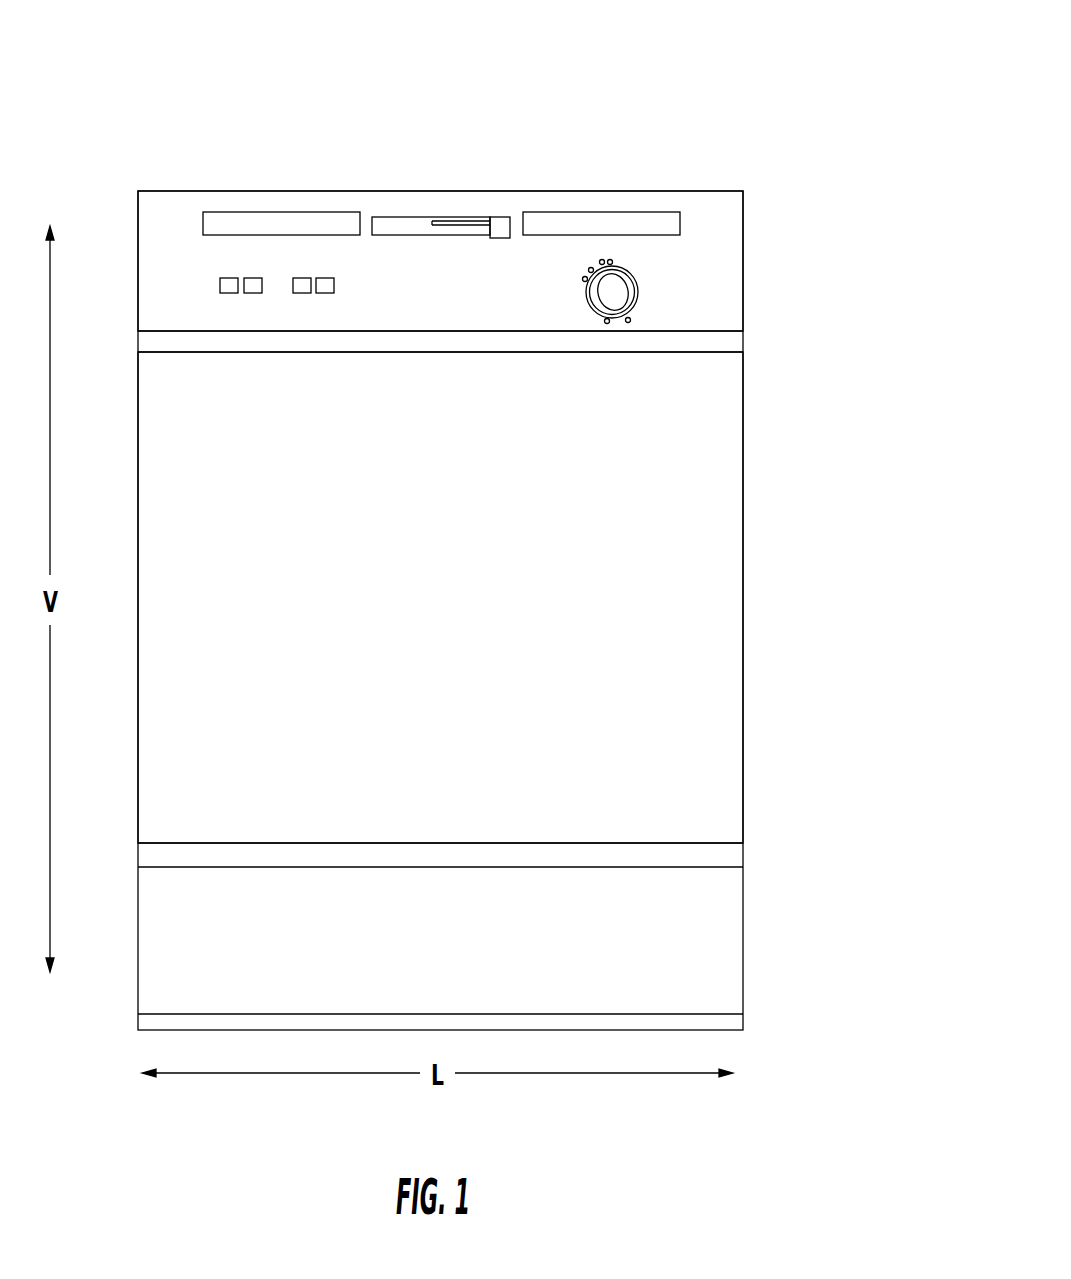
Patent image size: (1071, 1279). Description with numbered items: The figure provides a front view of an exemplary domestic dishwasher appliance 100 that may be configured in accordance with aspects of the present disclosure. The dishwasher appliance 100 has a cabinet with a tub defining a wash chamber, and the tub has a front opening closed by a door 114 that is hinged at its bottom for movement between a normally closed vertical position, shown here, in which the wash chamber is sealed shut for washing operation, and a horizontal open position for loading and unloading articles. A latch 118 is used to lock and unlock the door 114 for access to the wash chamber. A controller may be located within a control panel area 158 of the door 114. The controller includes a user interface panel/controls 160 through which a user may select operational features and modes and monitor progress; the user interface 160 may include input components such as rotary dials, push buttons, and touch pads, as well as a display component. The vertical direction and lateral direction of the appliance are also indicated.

The dishwasher appliance 100 is at (650, 100).
The door 114 is at (687, 576).
The latch 118 is at (503, 217).
The control panel area 158 is at (708, 237).
The user interface panel/controls 160 is at (302, 290).